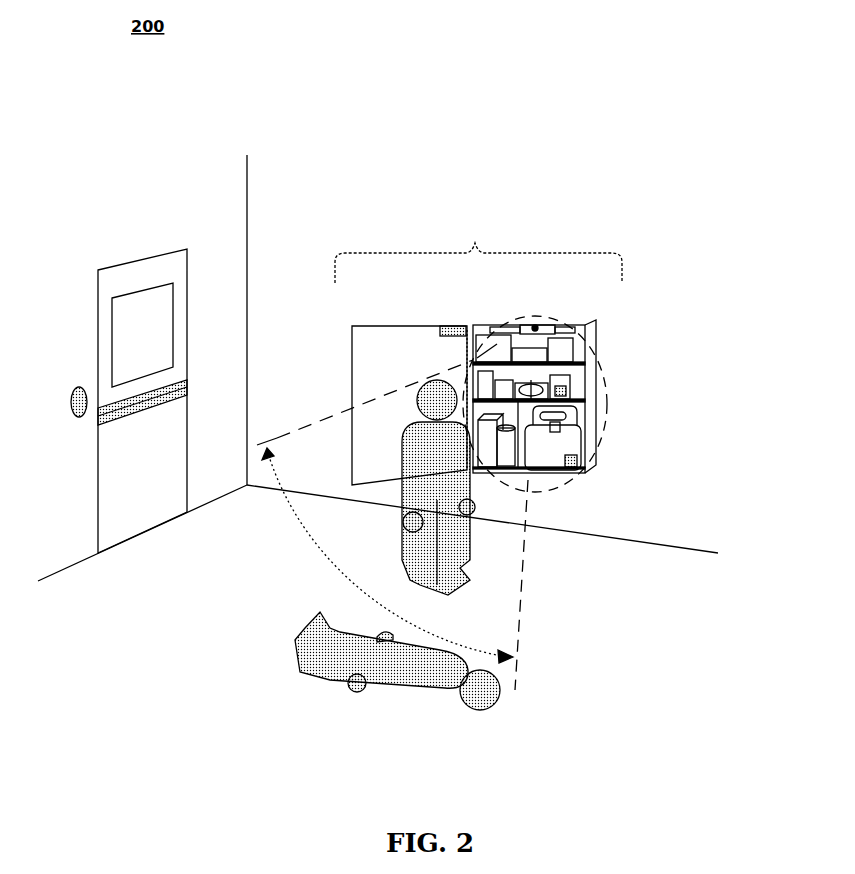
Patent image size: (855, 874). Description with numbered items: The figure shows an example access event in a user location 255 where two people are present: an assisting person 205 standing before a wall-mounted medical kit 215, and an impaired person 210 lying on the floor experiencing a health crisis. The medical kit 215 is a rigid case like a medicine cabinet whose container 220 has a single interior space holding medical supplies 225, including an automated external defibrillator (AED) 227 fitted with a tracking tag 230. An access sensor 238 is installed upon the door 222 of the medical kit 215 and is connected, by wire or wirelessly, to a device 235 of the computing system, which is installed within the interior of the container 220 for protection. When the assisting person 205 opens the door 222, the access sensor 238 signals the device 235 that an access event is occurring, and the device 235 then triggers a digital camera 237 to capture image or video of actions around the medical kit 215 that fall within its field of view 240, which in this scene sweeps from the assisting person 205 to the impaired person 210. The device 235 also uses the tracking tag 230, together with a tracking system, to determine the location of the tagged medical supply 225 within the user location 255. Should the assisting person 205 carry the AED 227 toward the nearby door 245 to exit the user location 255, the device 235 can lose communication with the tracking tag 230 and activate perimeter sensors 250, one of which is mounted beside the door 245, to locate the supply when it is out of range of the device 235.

The assisting person 205 is at (438, 487).
The impaired person 210 is at (397, 661).
The medical kit 215 is at (478, 251).
The container 220 is at (478, 325).
The door 222 is at (409, 405).
The medical supplies 225 is at (603, 367).
The automated external defibrillator (AED) 227 is at (547, 457).
The tracking tag 230 is at (572, 460).
The device 235 is at (506, 338).
The digital camera 237 is at (536, 353).
The access sensor 238 is at (455, 326).
The field of view 240 is at (387, 555).
The door 245 is at (142, 401).
The perimeter sensors 250 is at (77, 388).
The user location 255 is at (378, 368).